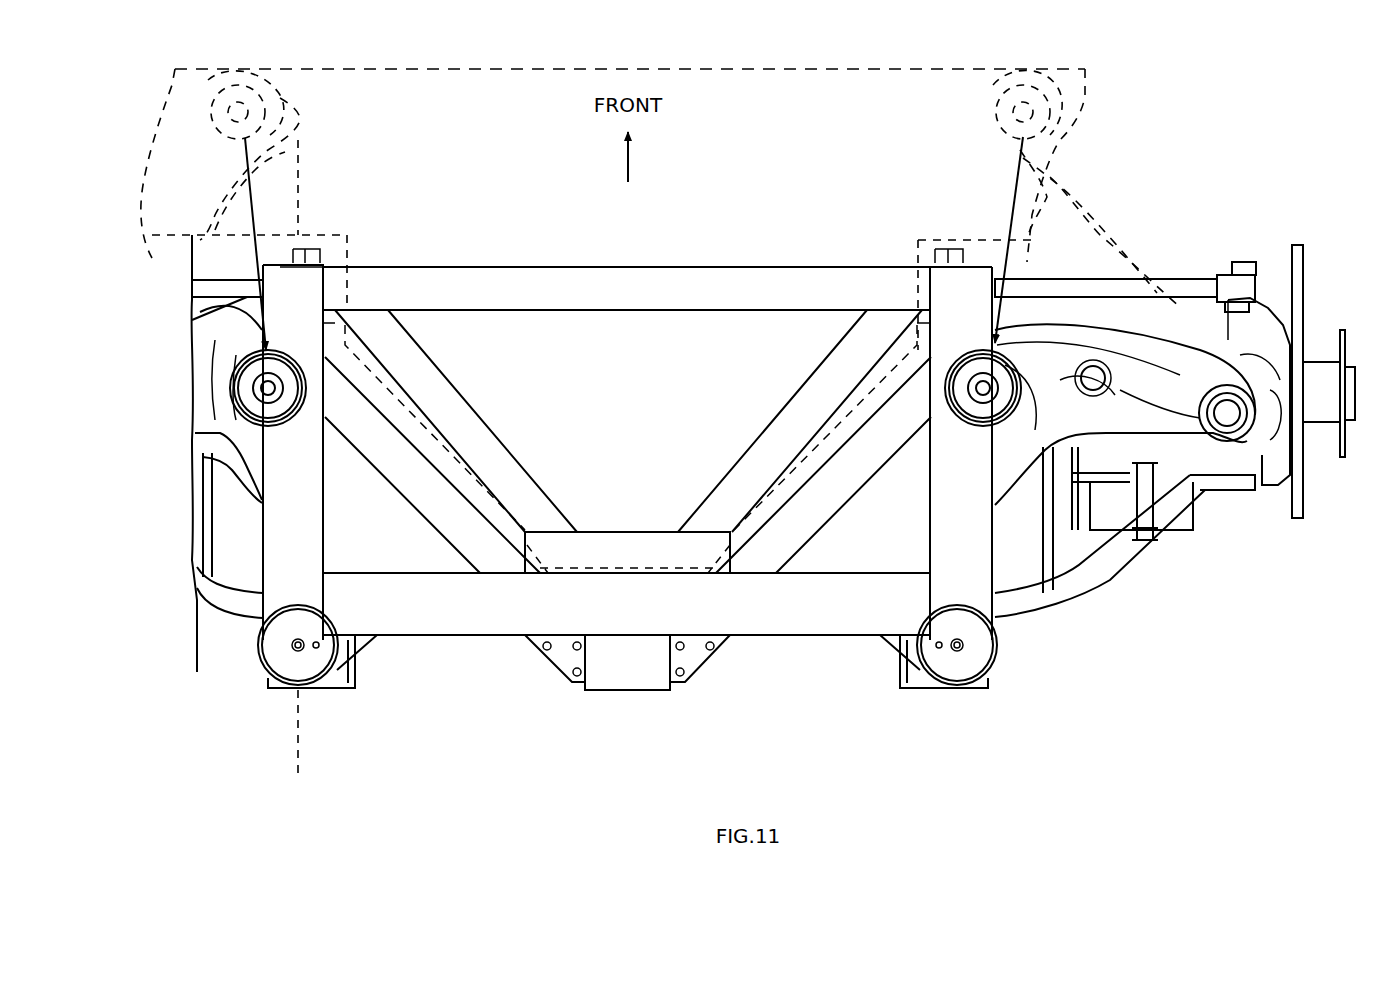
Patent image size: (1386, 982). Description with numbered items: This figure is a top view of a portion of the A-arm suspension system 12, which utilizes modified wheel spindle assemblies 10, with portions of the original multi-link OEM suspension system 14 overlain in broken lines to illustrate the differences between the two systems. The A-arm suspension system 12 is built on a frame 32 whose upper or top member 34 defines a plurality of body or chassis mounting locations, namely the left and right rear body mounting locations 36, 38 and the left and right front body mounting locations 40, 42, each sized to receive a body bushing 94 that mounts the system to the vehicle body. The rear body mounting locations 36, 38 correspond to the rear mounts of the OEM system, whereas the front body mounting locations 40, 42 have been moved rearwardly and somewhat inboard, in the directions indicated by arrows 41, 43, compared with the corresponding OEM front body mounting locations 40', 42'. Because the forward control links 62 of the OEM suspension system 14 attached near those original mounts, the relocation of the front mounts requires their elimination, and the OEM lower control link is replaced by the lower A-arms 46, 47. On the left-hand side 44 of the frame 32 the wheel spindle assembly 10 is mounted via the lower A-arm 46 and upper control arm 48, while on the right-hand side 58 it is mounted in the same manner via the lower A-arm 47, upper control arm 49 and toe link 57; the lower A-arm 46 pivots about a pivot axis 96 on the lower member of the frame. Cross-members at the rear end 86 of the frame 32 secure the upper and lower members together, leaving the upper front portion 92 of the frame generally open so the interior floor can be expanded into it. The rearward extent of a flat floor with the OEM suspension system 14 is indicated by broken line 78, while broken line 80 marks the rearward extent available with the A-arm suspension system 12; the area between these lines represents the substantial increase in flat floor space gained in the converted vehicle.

The wheel spindle assembly 10 is at (1250, 486).
The A-arm suspension system 12 is at (410, 704).
The OEM suspension system 14 is at (291, 98).
The frame 32 is at (465, 641).
The upper or top member 34 is at (630, 617).
The left rear body mounting location 36 is at (325, 689).
The right rear body mounting location 38 is at (927, 689).
The left front body mounting location 40 is at (275, 428).
The left front body mounting location of OEM suspension 40' is at (220, 108).
The arrow 41 is at (249, 190).
The right front body mounting location 42 is at (981, 421).
The right front body mounting location of OEM suspension 42' is at (1061, 104).
The arrow 43 is at (1012, 195).
The left-hand side of frame 44 is at (262, 510).
The lower A-arm 46 is at (240, 620).
The lower A-arm 47 is at (1035, 616).
The upper control arm 48 is at (212, 433).
The upper control arm 49 is at (1097, 320).
The toe link 57 is at (1192, 280).
The right-hand side of frame 58 is at (997, 538).
The forward control links 62 is at (198, 190).
The broken line 78 is at (655, 67).
The broken line 80 is at (616, 565).
The rear end of frame 86 is at (757, 636).
The upper front portion of frame 92 is at (664, 266).
The body bushing 94 is at (306, 355).
The pivot axis 96 is at (297, 746).